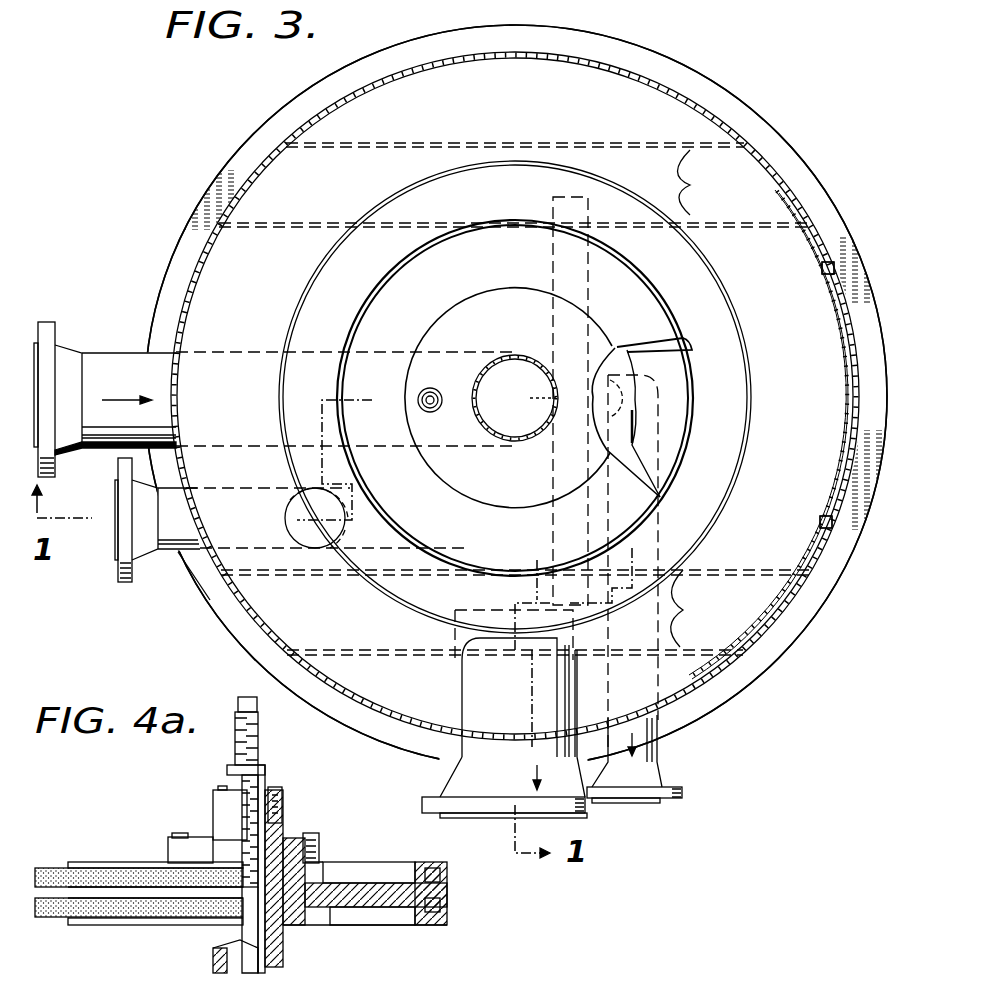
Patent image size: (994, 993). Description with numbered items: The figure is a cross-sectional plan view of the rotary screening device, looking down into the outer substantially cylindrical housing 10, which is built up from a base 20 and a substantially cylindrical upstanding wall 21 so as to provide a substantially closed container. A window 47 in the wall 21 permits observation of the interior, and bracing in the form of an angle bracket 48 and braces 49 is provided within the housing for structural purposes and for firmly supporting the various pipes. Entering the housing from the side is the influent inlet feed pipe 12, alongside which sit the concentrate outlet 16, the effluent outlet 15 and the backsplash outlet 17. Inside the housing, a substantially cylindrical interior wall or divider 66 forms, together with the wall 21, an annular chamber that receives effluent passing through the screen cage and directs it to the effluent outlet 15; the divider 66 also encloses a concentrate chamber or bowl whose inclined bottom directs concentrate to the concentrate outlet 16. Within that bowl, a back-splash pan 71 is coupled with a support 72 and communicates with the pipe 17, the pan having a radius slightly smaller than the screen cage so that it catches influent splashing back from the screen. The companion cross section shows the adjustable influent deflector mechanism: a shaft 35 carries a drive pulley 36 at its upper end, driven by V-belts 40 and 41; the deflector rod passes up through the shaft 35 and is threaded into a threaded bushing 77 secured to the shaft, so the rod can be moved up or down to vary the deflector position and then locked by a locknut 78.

In FIG. 3, the housing 10 is at (712, 98).
In FIG. 3, the influent inlet feed pipe 12 is at (528, 325).
In FIG. 3, the effluent outlet 15 is at (470, 780).
In FIG. 3, the concentrate outlet 16 is at (200, 556).
In FIG. 3, the backsplash outlet 17 is at (650, 752).
In FIG. 3, the base 20 is at (782, 652).
In FIG. 3, the upstanding wall 21 is at (790, 150).
In FIG. 4a, the shaft 35 is at (270, 952).
In FIG. 4a, the drive pulley 36 is at (356, 894).
In FIG. 4a, the V-belt 40 is at (452, 880).
In FIG. 4a, the V-belt 41 is at (452, 905).
In FIG. 3, the window 47 is at (834, 272).
In FIG. 3, the angle bracket 48 is at (842, 328).
In FIG. 3, the braces 49 is at (710, 398).
In FIG. 3, the interior wall or divider 66 is at (750, 450).
In FIG. 3, the back-splash pan 71 is at (668, 343).
In FIG. 3, the support 72 is at (640, 380).
In FIG. 4a, the threaded bushing 77 is at (268, 788).
In FIG. 4a, the locknut 78 is at (226, 769).